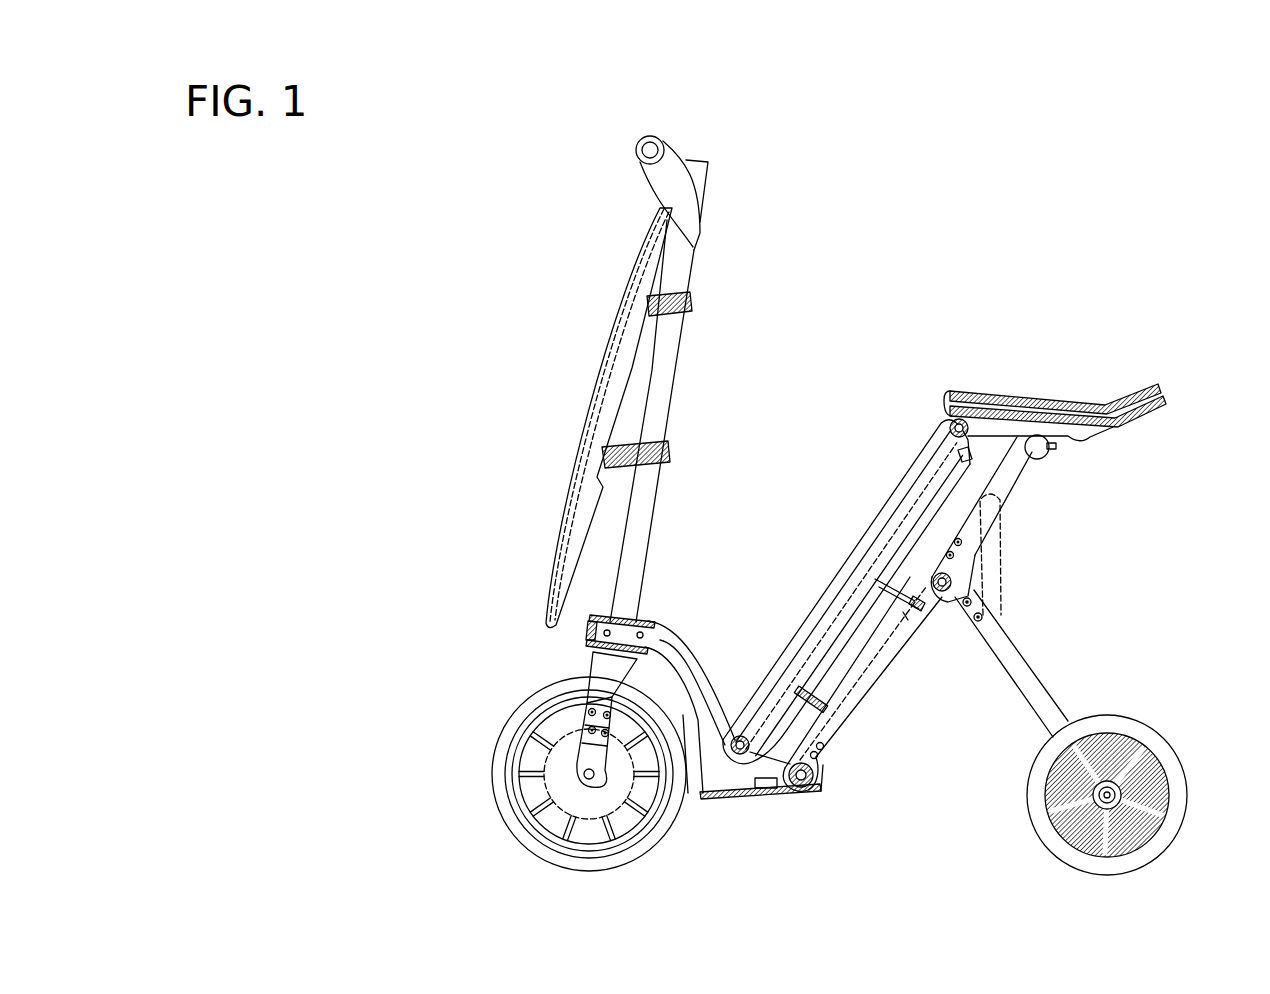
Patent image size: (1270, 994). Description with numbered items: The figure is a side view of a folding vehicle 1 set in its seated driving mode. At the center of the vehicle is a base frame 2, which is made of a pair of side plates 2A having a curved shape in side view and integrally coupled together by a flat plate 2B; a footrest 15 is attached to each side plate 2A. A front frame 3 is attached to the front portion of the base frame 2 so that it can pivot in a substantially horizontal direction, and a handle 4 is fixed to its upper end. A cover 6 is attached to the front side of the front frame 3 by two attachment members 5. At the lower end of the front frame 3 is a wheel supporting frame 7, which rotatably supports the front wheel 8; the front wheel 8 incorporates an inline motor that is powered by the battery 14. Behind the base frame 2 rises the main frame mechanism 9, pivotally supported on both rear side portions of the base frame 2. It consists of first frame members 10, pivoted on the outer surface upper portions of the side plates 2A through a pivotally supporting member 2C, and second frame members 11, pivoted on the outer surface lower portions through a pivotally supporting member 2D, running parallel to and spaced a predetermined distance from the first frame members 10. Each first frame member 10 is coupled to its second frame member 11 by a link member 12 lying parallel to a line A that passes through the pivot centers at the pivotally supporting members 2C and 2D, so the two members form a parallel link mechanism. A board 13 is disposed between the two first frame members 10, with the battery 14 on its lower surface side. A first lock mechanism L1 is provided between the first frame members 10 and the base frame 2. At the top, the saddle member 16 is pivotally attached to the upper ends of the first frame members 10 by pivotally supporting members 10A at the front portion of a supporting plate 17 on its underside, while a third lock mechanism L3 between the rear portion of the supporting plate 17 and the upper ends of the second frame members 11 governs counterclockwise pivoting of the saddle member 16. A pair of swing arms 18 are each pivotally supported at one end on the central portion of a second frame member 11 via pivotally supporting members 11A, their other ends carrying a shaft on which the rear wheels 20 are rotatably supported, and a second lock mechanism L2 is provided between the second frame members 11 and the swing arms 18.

The folding vehicle 1 is at (865, 293).
The base frame 2 is at (716, 630).
The side plate 2A is at (731, 792).
The flat plate 2B is at (695, 790).
The pivotally supporting member 2C is at (742, 735).
The pivotally supporting member 2D is at (820, 795).
The front frame 3 is at (673, 388).
The handle 4 is at (674, 158).
The attachment member 5 is at (690, 300).
The cover 6 is at (613, 357).
The wheel supporting frame 7 is at (603, 665).
The front wheel 8 is at (502, 773).
The main frame mechanism 9 is at (870, 684).
The first frame member 10 is at (847, 581).
The pivotally supporting member 10A is at (948, 424).
The second frame member 11 is at (1000, 498).
The pivotally supporting member 11A is at (960, 565).
The link member 12 is at (900, 615).
The board 13 is at (838, 573).
The battery 14 is at (837, 657).
The footrest 15 is at (780, 789).
The saddle member 16 is at (1053, 404).
The supporting plate 17 is at (997, 405).
The swing arm 18 is at (1030, 682).
The rear wheel 20 is at (1164, 751).
The line A is at (818, 783).
The first lock mechanism L1 is at (712, 742).
The second lock mechanism L2 is at (1056, 574).
The third lock mechanism L3 is at (1090, 452).